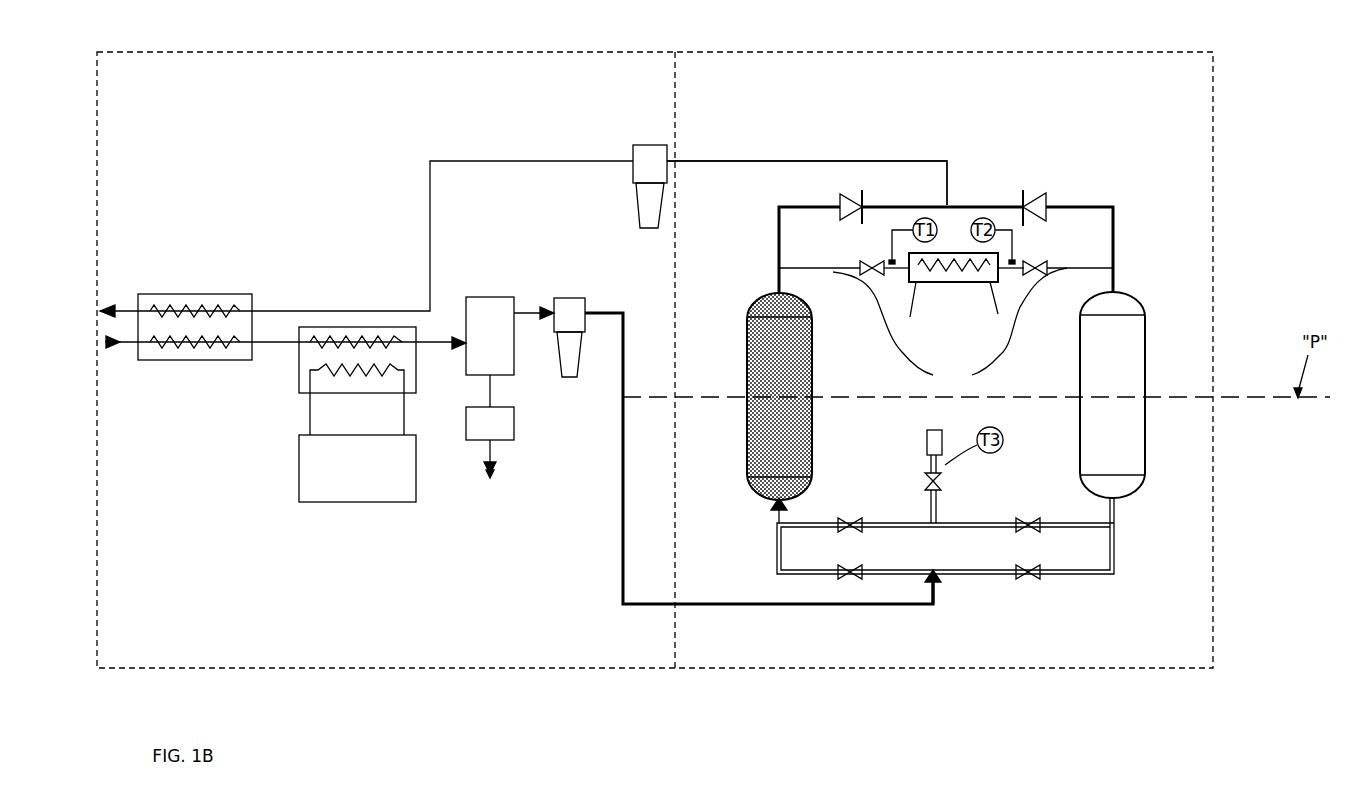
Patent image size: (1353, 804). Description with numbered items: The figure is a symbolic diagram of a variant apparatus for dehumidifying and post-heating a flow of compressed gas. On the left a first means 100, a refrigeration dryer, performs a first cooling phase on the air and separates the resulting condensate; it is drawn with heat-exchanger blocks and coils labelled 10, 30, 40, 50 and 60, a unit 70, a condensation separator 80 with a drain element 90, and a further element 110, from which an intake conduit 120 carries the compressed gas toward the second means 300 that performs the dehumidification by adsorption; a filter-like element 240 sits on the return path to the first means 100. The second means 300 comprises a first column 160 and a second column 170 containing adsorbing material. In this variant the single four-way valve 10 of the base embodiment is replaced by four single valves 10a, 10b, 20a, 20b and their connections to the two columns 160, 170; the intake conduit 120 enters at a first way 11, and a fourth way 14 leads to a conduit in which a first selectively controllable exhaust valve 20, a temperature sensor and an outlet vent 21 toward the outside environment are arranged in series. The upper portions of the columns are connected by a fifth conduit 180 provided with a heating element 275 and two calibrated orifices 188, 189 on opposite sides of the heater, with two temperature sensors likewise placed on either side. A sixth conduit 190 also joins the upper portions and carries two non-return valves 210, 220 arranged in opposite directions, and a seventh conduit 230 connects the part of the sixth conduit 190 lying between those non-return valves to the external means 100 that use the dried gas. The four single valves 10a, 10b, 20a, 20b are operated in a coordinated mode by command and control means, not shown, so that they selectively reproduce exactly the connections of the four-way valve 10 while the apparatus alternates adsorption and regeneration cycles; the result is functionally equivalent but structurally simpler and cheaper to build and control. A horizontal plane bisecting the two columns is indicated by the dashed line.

The four-way valve 10 is at (160, 293).
The first selectively controllable exhaust valve 20 is at (172, 345).
The heating coil 30 is at (227, 290).
The second heat exchanger 40 is at (320, 327).
The cooling coil 50 is at (368, 337).
The refrigerant coil 60 is at (303, 388).
The refrigeration unit 70 is at (299, 480).
The condensation separator 80 is at (498, 365).
The drain collector 90 is at (514, 420).
The first means (refrigeration dryer) 100 is at (150, 670).
The filter separator 110 is at (570, 298).
The intake conduit 120 is at (617, 500).
The first column 160 is at (812, 395).
The second column 170 is at (1147, 368).
The fifth conduit 180 is at (950, 328).
The calibrated orifice 188 is at (868, 262).
The calibrated orifice 189 is at (1040, 262).
The sixth conduit 190 is at (777, 232).
The non-return valve 210 is at (858, 203).
The non-return valve 220 is at (1030, 195).
The seventh conduit 230 is at (900, 161).
The filter 240 is at (650, 145).
The heating element 275 is at (963, 290).
The second means 300 is at (790, 668).
The outlet vent 21 is at (926, 436).
The fourth way 14 is at (930, 513).
The single valve 20a is at (846, 520).
The single valve 20b is at (1030, 520).
The single valve 10a is at (850, 578).
The single valve 10b is at (1030, 580).
The first way 11 is at (937, 598).